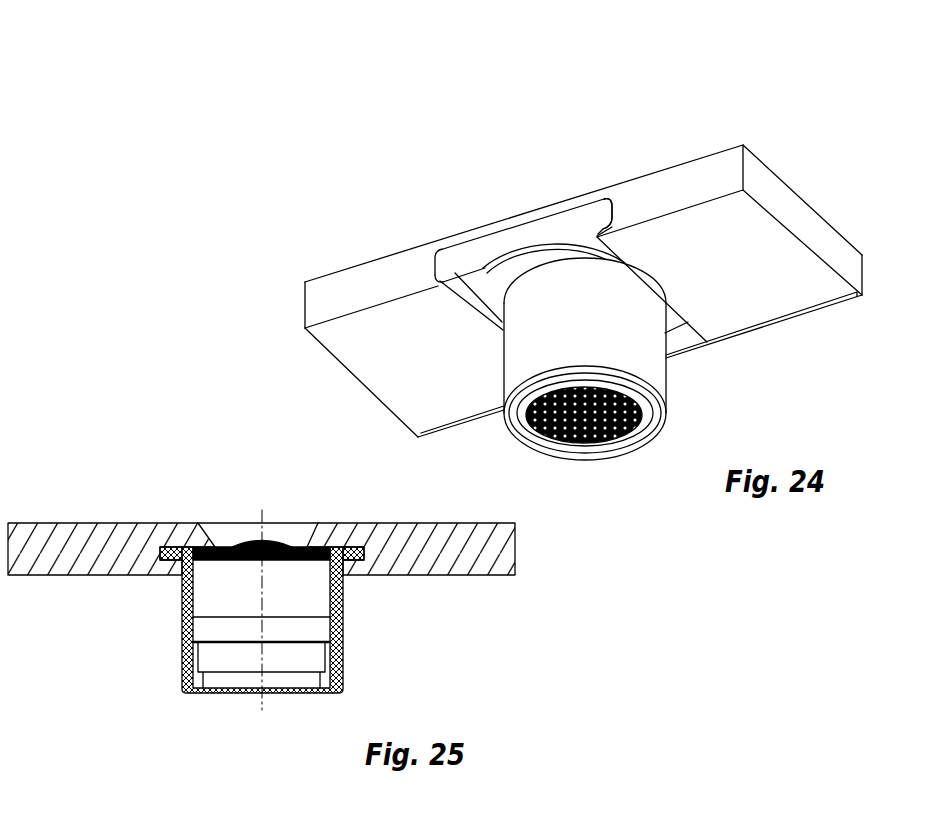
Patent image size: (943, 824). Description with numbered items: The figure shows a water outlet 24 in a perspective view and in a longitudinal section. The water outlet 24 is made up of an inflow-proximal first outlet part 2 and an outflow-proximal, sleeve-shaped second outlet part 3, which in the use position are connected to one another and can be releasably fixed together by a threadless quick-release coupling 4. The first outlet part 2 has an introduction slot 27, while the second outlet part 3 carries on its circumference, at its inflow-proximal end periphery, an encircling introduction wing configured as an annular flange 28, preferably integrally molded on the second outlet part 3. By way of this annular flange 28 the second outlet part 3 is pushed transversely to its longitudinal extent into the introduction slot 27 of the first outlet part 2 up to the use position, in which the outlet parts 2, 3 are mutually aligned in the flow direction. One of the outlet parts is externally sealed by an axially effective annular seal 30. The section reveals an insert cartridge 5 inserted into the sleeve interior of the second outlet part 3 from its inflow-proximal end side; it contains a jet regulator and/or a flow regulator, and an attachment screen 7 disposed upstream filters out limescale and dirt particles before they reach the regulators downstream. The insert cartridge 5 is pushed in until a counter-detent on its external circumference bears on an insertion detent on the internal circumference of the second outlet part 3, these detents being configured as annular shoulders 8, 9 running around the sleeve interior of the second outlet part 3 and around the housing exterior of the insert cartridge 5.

In FIG. 24, the first outlet part 2 is at (405, 268).
In FIG. 25, the first outlet part 2 is at (118, 563).
In FIG. 24, the second outlet part 3 is at (580, 347).
In FIG. 25, the second outlet part 3 is at (343, 620).
In FIG. 24, the quick-release coupling 4 is at (596, 215).
In FIG. 24, the insert cartridge 5 is at (528, 442).
In FIG. 25, the insert cartridge 5 is at (310, 613).
In FIG. 25, the attachment screen 7 is at (279, 538).
In FIG. 25, the annular shoulder 8 is at (208, 627).
In FIG. 25, the annular shoulder 9 is at (295, 652).
In FIG. 24, the water outlet 24 is at (413, 122).
In FIG. 25, the water outlet 24 is at (143, 462).
In FIG. 24, the introduction slot 27 is at (470, 258).
In FIG. 24, the annular flange 28 is at (558, 246).
In FIG. 25, the annular flange 28 is at (358, 546).
In FIG. 25, the annular seal 30 is at (203, 540).